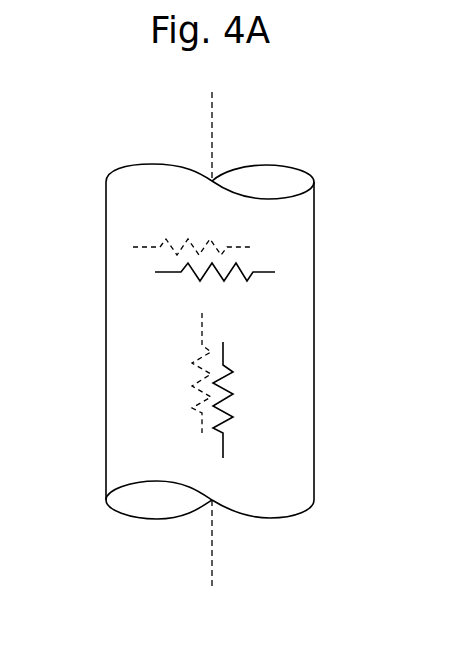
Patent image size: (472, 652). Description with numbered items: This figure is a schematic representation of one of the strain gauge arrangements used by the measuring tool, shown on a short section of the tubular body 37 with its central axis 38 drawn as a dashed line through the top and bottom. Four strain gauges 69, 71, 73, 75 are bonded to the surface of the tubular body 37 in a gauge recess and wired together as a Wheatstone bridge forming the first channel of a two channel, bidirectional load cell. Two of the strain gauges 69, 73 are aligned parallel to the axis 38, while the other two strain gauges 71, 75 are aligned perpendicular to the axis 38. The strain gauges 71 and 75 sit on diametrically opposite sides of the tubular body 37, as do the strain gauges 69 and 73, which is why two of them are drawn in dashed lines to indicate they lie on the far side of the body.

The tubular body 37 is at (314, 210).
The axis 38 is at (212, 110).
The strain gauge 69 is at (223, 349).
The strain gauge 71 is at (265, 273).
The strain gauge 73 is at (202, 418).
The strain gauge 75 is at (143, 247).